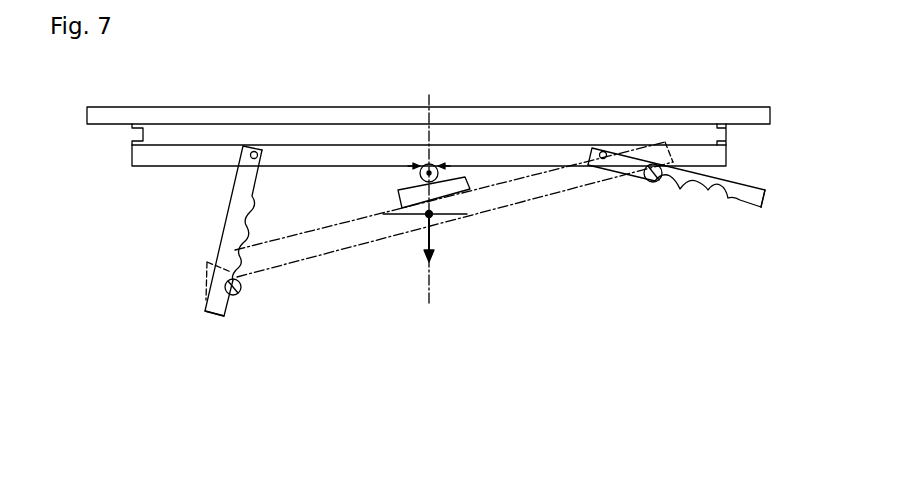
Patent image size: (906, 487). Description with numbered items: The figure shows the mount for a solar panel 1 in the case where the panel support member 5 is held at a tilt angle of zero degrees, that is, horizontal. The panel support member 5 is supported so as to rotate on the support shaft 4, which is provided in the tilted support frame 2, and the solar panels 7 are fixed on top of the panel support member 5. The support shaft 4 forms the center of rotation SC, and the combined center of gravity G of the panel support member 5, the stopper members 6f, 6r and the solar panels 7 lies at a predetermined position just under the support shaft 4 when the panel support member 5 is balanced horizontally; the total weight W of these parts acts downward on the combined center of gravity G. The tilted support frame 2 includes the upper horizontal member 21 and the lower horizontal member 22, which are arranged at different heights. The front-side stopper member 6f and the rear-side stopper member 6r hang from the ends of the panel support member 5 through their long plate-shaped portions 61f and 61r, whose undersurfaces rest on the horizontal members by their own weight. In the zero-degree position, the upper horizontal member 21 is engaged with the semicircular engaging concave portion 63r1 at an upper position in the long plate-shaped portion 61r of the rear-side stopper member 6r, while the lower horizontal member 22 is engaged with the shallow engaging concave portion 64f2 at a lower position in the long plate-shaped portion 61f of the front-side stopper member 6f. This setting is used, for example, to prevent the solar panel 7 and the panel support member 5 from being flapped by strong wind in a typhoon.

The mount for a solar panel 1 is at (594, 340).
The tilted support frame 2 is at (388, 235).
The support shaft 4 is at (448, 188).
The panel support member 5 is at (326, 153).
The front-side stopper member 6f is at (214, 248).
The rear-side stopper member 6r is at (744, 180).
The solar panel 7 is at (540, 107).
The upper horizontal member 21 is at (661, 179).
The lower horizontal member 22 is at (243, 285).
The long plate-shaped portion of the front-side stopper member 61f is at (208, 308).
The long plate-shaped portion of the rear-side stopper member 61r is at (765, 207).
The engaging concave portion 63r1 is at (650, 181).
The shallow engaging concave portion 64f2 is at (242, 294).
The combined center of gravity G is at (425, 213).
The center of rotation SC is at (427, 166).
The total weight W is at (423, 249).